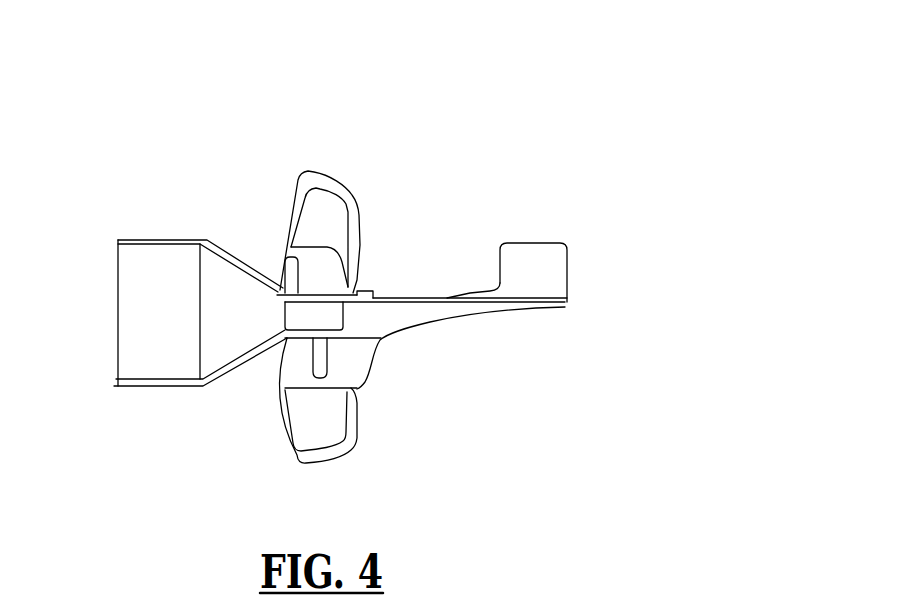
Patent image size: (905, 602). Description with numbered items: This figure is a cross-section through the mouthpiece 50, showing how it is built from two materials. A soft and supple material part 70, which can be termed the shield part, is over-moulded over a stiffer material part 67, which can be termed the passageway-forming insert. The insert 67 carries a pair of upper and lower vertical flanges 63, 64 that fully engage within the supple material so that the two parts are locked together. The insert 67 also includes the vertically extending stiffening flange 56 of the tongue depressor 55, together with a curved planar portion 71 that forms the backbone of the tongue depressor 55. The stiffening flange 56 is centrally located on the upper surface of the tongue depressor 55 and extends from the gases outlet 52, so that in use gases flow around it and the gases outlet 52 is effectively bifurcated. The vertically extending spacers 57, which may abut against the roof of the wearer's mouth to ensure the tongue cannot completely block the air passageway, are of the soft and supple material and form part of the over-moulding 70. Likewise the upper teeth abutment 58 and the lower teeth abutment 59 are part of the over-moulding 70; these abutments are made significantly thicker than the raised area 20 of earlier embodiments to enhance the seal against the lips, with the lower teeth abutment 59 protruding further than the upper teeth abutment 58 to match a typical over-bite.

The mouthpiece 50 is at (144, 122).
The raised area 20 is at (363, 297).
The gases outlet 52 is at (345, 310).
The tongue depressor 55 is at (458, 309).
The vertical stiffening flange 56 is at (401, 307).
The vertically extending spacers 57 is at (538, 260).
The upper teeth abutment 58 is at (333, 267).
The lower teeth abutment 59 is at (357, 377).
The upper vertical flange 63 is at (290, 268).
The lower vertical flange 64 is at (317, 375).
The stiffer material part 67 is at (258, 287).
The soft and supple material part 70 is at (293, 200).
The curved planar portion 71 is at (503, 303).